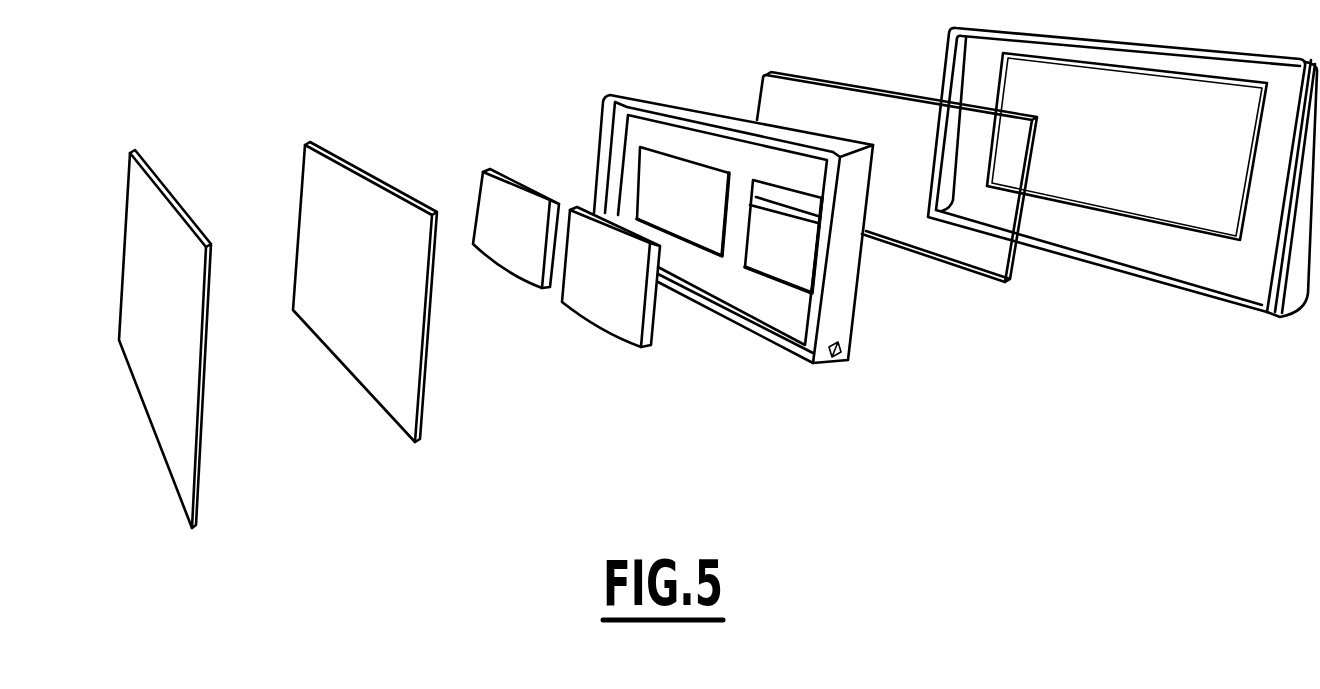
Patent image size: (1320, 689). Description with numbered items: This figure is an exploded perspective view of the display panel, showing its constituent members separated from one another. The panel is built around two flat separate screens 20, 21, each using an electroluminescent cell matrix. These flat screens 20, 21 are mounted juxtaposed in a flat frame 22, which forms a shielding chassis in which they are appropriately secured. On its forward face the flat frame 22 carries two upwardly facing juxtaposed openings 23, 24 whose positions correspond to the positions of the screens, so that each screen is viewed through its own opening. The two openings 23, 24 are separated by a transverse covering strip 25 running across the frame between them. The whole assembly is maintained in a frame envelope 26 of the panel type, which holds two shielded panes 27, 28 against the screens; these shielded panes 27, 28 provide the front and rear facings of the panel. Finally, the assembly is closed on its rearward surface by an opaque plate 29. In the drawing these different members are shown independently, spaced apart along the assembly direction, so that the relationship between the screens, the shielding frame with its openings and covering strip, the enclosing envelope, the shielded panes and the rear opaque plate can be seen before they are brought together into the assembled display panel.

The flat screen 20 is at (495, 268).
The flat screen 21 is at (594, 327).
The flat frame 22 is at (747, 231).
The opening 23 is at (657, 184).
The opening 24 is at (795, 255).
The transverse covering strip 25 is at (731, 220).
The frame envelope 26 is at (1187, 304).
The shielded pane 27 is at (977, 257).
The shielded pane 28 is at (385, 390).
The opaque plate 29 is at (164, 485).